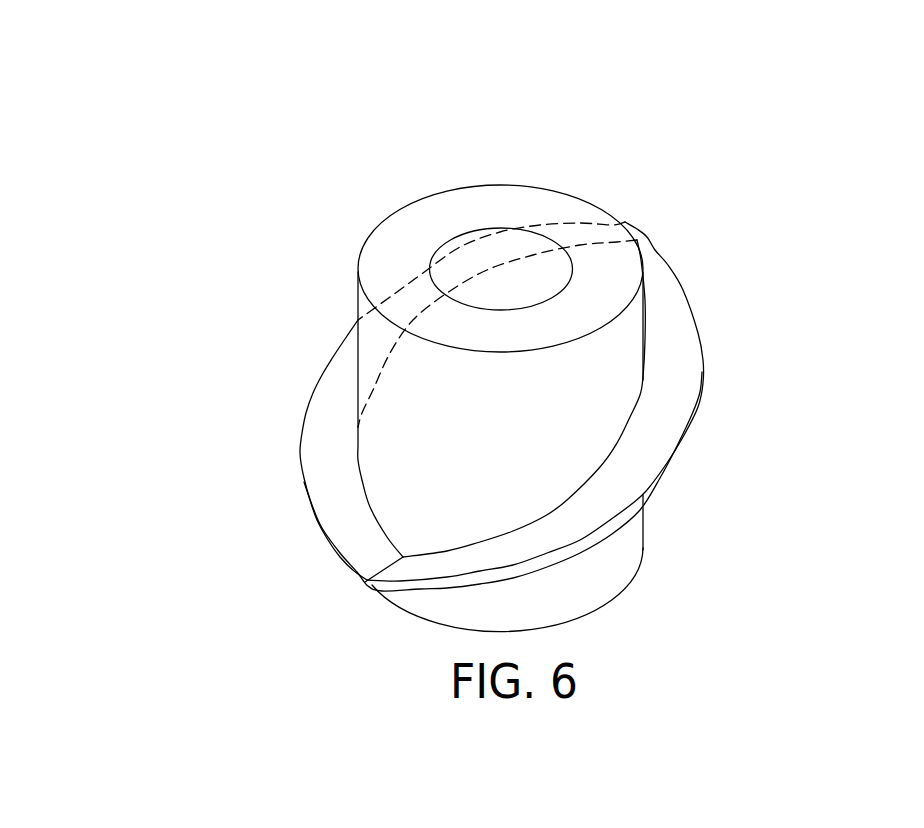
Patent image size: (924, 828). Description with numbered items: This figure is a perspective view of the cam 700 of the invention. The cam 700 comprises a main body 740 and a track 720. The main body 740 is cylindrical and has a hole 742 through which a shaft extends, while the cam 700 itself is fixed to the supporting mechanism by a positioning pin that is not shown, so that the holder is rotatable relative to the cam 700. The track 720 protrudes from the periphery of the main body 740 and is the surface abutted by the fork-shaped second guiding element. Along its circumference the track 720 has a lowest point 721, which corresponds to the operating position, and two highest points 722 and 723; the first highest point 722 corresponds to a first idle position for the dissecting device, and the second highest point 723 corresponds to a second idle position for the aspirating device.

The cam 700 is at (810, 62).
The track 720 is at (677, 453).
The lowest point 721 is at (373, 582).
The highest point 722 is at (655, 268).
The highest point 723 is at (582, 238).
The main body 740 is at (390, 265).
The hole 742 is at (500, 262).